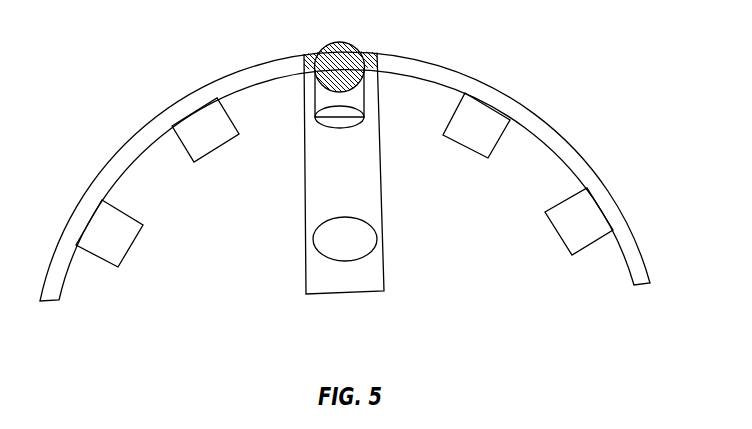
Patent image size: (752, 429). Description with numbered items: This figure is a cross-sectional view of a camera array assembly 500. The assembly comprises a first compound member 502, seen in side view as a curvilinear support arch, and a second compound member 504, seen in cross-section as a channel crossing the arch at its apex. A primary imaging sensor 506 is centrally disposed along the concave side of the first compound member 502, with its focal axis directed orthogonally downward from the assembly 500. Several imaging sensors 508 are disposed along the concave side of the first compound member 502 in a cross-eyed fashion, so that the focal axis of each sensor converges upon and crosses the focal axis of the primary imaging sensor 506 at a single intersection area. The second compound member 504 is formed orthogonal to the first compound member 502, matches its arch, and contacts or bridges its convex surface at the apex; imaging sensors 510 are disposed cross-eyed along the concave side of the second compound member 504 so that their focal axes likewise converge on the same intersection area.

The camera array assembly 500 is at (345, 190).
The first compound member 502 is at (555, 137).
The second compound member 504 is at (377, 279).
The primary imaging sensor 506 is at (360, 97).
The imaging sensors 508 is at (212, 150).
The imaging sensors 510 is at (340, 42).